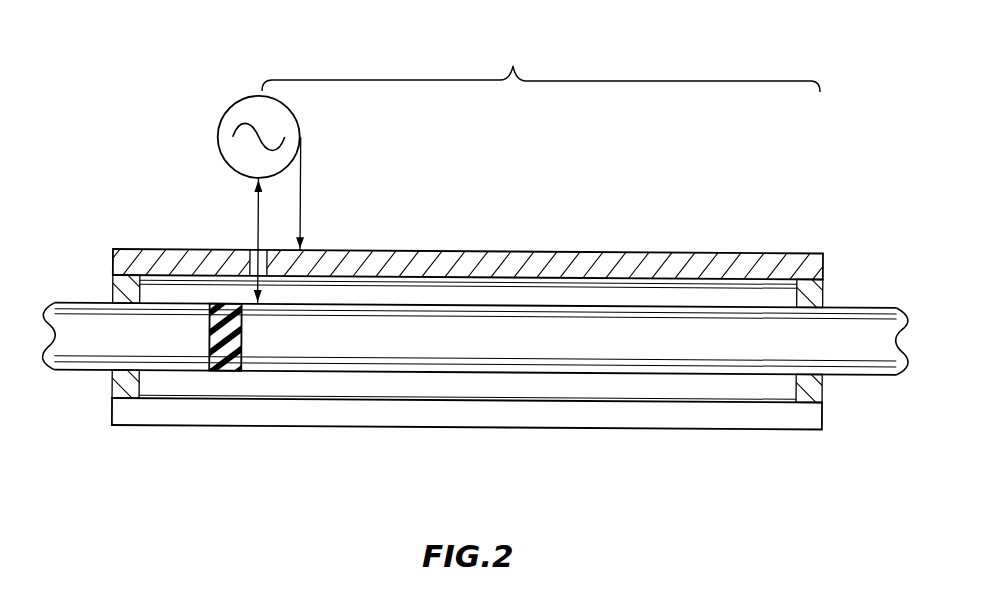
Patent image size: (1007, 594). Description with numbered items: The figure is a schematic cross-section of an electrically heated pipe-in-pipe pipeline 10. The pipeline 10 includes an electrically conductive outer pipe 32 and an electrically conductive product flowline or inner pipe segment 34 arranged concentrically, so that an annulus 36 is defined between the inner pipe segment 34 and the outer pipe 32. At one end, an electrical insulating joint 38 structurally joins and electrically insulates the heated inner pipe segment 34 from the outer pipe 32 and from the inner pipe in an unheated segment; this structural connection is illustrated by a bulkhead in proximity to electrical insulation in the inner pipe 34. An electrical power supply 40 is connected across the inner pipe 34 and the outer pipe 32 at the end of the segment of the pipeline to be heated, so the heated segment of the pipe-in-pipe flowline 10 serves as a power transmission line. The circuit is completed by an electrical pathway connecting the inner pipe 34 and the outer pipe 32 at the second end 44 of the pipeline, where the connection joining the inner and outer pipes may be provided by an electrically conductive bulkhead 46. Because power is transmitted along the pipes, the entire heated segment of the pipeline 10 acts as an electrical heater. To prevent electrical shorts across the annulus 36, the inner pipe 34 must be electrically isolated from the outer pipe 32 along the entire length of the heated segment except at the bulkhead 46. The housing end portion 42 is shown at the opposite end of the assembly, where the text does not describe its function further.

The pipeline 10 is at (513, 66).
The outer pipe 32 is at (519, 265).
The inner pipe segment 34 is at (633, 306).
The annulus 36 is at (361, 378).
The electrical insulating joint 38 is at (217, 306).
The electrical power supply 40 is at (309, 131).
The left end cap 42 is at (112, 407).
The second end 44 is at (826, 422).
The electrically conductive bulkhead 46 is at (826, 292).